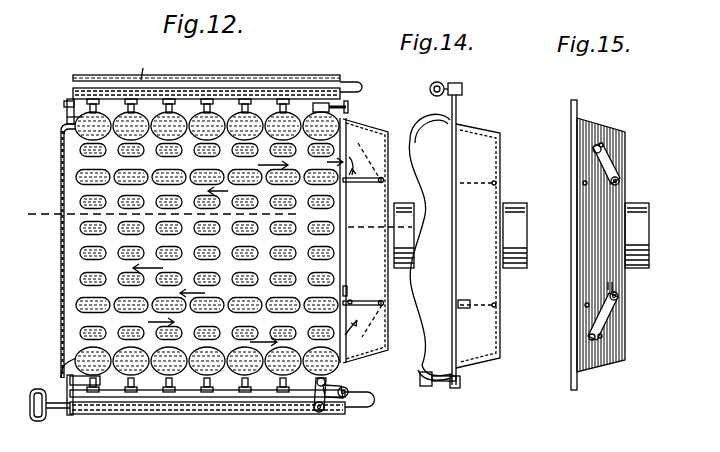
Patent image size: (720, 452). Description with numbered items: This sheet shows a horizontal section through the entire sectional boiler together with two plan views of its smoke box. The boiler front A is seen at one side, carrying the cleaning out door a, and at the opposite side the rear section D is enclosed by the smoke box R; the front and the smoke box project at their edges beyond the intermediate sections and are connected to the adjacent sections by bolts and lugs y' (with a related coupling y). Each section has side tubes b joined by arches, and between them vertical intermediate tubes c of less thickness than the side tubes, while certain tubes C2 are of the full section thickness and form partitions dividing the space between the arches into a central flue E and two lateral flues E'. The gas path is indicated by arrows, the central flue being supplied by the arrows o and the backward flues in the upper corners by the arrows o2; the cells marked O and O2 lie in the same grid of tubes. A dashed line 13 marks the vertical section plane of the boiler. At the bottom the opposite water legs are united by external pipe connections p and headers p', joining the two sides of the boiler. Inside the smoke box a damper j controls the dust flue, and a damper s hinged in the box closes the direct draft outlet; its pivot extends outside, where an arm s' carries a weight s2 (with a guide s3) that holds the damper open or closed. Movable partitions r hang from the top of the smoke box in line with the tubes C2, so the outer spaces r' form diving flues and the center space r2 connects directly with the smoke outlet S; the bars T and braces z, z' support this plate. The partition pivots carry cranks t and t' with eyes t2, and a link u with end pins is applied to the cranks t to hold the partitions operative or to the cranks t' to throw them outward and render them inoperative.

In FIG. 12, the external pipe connections p is at (217, 73).
In FIG. 12, the headers p' is at (140, 64).
In FIG. 12, the bolts and lugs y' is at (97, 72).
In FIG. 14, the bolts and lugs y' is at (440, 388).
In FIG. 12, the pipe coupling y is at (344, 103).
In FIG. 12, the central flue E is at (207, 180).
In FIG. 12, the lateral flues E' is at (207, 345).
In FIG. 12, the cell O is at (126, 326).
In FIG. 12, the arrows o is at (188, 217).
In FIG. 12, the vertical intermediate tubes c is at (268, 276).
In FIG. 12, the partition tubes C2 is at (280, 188).
In FIG. 12, the arrows o2 is at (207, 316).
In FIG. 12, the cell O2 is at (207, 339).
In FIG. 12, the cleaning out door a is at (60, 241).
In FIG. 12, the side tubes b is at (74, 130).
In FIG. 12, the boiler front A is at (66, 118).
In FIG. 12, the section line 13 is at (154, 214).
In FIG. 14, the section line 13 is at (414, 229).
In FIG. 12, the outer spaces r' is at (375, 240).
In FIG. 14, the outer spaces r' is at (401, 242).
In FIG. 12, the cross bar T is at (368, 182).
In FIG. 12, the diagonal brace z is at (363, 249).
In FIG. 12, the pivot z' is at (350, 295).
In FIG. 12, the center space r2 is at (360, 298).
In FIG. 12, the damper j is at (380, 224).
In FIG. 14, the arm s' is at (455, 224).
In FIG. 14, the weight s2 is at (431, 84).
In FIG. 14, the rod guide s3 is at (457, 110).
In FIG. 14, the rear section D is at (430, 247).
In FIG. 14, the smoke box R is at (501, 150).
In FIG. 15, the smoke box R is at (606, 372).
In FIG. 14, the smoke outlet S is at (514, 204).
In FIG. 15, the smoke outlet S is at (650, 250).
In FIG. 14, the damper s is at (467, 315).
In FIG. 15, the cranks t is at (602, 241).
In FIG. 15, the movable partitions r is at (626, 242).
In FIG. 15, the cranks t' is at (618, 246).
In FIG. 15, the link u is at (612, 286).
In FIG. 15, the eyes t2 is at (590, 337).